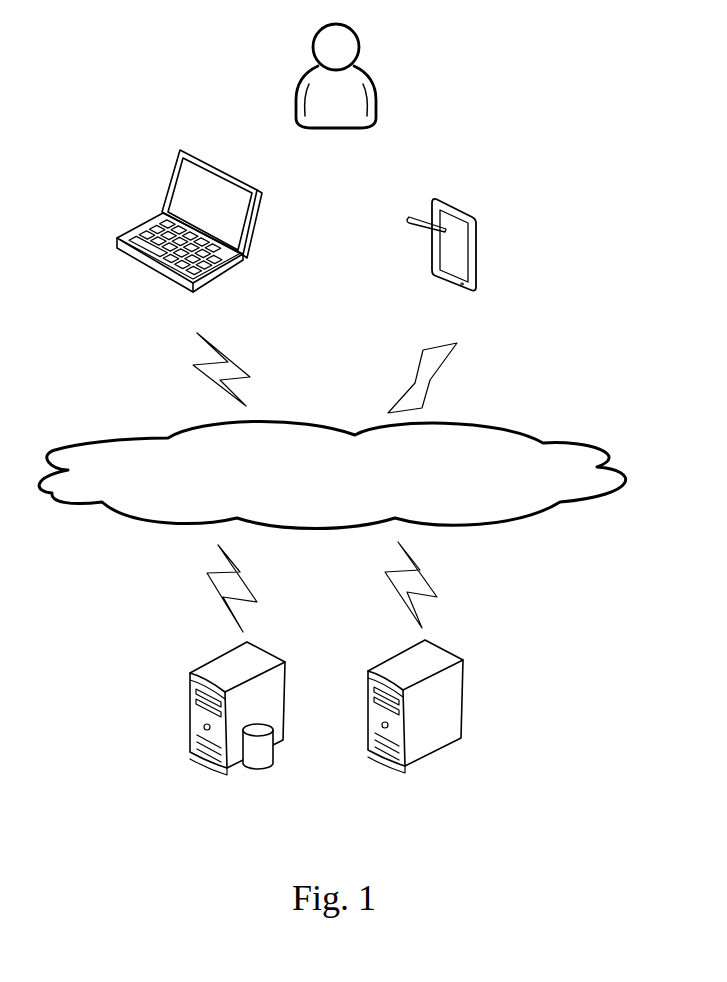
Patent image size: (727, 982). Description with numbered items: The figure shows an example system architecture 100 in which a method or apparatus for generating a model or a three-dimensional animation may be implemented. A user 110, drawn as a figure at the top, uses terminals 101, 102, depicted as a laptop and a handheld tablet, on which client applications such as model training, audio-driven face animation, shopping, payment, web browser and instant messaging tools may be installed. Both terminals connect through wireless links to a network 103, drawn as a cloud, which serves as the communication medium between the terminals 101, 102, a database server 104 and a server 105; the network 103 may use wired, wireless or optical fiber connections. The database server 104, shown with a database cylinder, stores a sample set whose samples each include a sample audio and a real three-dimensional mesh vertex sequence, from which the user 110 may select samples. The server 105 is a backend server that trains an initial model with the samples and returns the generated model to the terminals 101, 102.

The system architecture 100 is at (557, 28).
The user 110 is at (336, 95).
The terminal 101 is at (189, 238).
The terminal 102 is at (441, 263).
The network 103 is at (332, 474).
The database server 104 is at (237, 730).
The server 105 is at (415, 729).